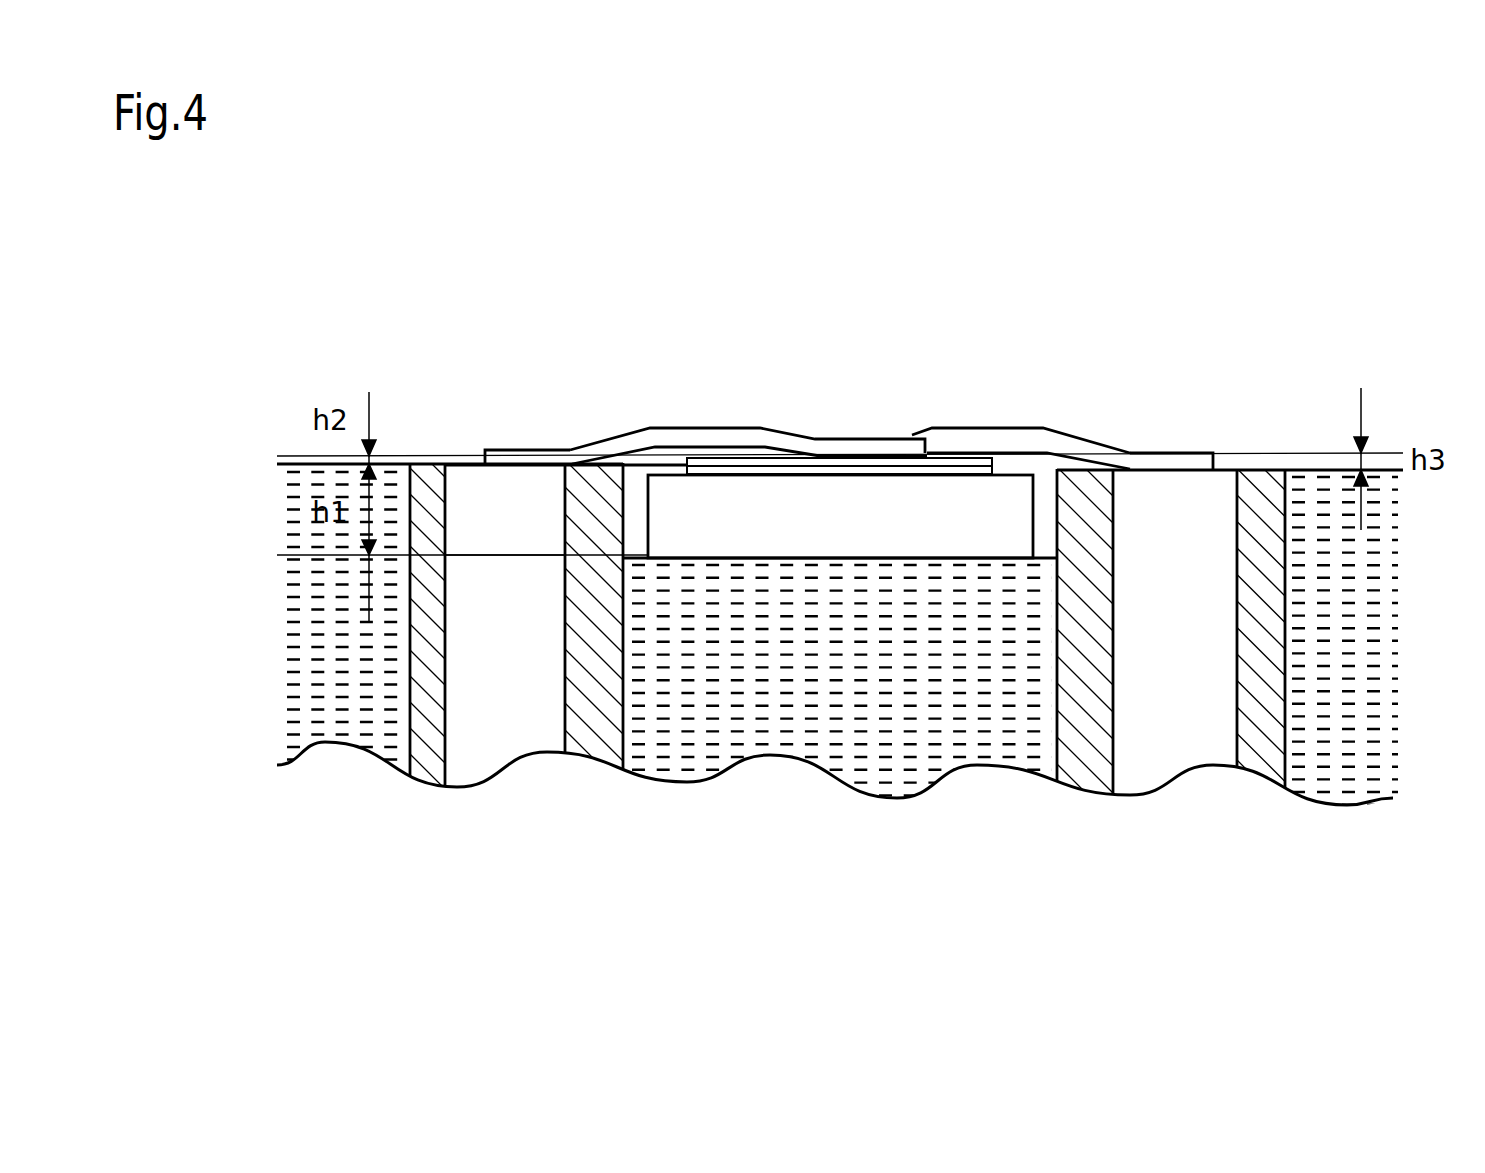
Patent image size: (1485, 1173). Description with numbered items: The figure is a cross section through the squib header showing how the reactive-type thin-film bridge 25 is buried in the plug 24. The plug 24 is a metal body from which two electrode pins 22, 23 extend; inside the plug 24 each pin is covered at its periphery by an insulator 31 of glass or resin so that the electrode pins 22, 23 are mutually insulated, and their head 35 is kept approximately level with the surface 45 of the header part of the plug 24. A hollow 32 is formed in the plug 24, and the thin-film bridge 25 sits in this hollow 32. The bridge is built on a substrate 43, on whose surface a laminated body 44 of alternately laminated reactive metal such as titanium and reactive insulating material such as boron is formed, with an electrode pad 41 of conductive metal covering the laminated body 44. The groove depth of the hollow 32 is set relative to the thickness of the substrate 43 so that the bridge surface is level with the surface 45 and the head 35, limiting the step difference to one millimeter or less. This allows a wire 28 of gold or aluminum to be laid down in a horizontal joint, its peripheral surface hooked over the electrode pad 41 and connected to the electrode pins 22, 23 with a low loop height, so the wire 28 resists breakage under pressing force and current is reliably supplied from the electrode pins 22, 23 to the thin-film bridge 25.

The electrode pin 22 is at (500, 728).
The electrode pin 23 is at (1162, 737).
The plug 24 is at (335, 710).
The thin-film bridge 25 is at (837, 706).
The wire 28 is at (970, 435).
The insulator 31 is at (437, 470).
The hollow 32 is at (1036, 462).
The head 35 is at (528, 452).
The electrode pad 41 is at (943, 465).
The substrate 43 is at (795, 523).
The laminated body 44 is at (740, 470).
The surface of the header part 45 is at (388, 462).